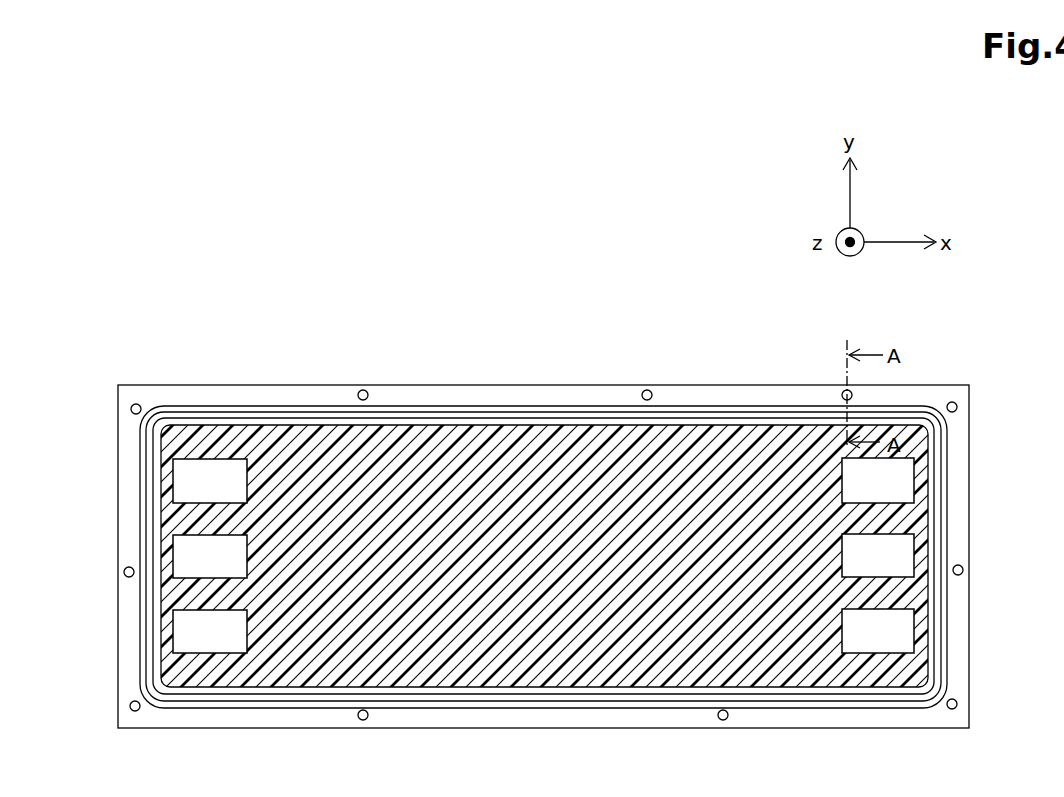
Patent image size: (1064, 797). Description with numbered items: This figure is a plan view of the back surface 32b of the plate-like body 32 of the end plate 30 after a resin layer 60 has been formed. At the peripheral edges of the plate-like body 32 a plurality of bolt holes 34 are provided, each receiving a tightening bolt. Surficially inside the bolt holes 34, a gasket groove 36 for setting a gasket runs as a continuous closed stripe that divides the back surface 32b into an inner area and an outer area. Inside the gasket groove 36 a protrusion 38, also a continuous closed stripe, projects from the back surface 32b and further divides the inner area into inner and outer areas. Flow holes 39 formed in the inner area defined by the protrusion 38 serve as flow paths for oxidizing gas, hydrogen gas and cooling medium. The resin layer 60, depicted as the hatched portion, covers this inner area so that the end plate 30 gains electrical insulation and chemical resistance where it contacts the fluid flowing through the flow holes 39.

The end plate 30 is at (513, 332).
The plate-like body 32 is at (455, 385).
The back surface 32b is at (595, 407).
The bolt hole 34 is at (840, 393).
The gasket groove 36 is at (905, 413).
The protrusion 38 is at (785, 412).
The flow hole 39 is at (190, 483).
The resin layer 60 is at (647, 672).